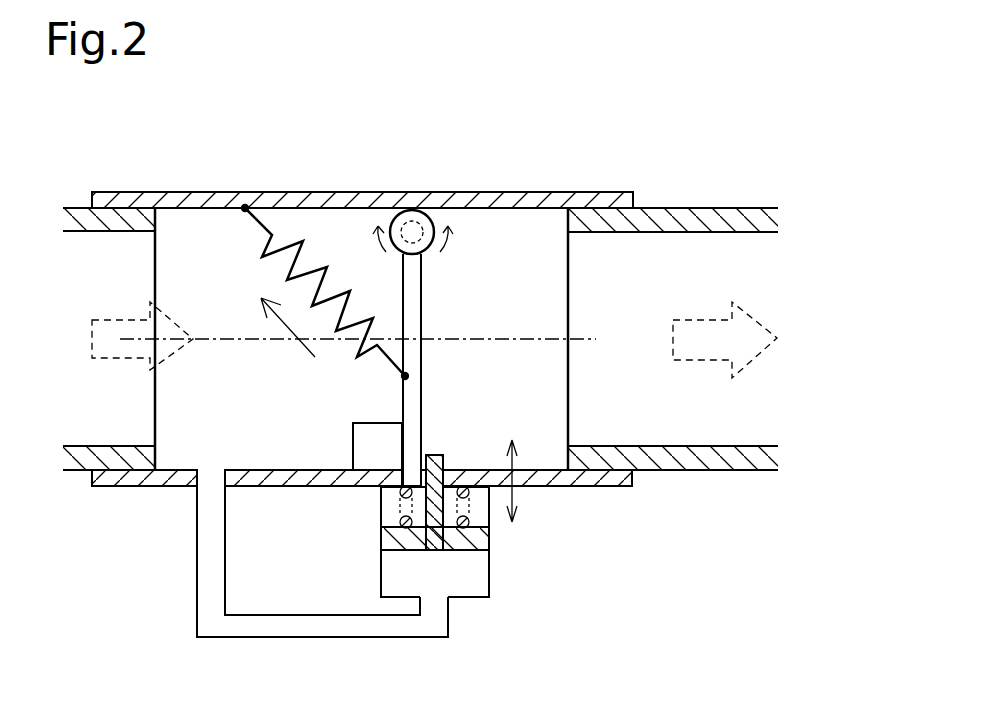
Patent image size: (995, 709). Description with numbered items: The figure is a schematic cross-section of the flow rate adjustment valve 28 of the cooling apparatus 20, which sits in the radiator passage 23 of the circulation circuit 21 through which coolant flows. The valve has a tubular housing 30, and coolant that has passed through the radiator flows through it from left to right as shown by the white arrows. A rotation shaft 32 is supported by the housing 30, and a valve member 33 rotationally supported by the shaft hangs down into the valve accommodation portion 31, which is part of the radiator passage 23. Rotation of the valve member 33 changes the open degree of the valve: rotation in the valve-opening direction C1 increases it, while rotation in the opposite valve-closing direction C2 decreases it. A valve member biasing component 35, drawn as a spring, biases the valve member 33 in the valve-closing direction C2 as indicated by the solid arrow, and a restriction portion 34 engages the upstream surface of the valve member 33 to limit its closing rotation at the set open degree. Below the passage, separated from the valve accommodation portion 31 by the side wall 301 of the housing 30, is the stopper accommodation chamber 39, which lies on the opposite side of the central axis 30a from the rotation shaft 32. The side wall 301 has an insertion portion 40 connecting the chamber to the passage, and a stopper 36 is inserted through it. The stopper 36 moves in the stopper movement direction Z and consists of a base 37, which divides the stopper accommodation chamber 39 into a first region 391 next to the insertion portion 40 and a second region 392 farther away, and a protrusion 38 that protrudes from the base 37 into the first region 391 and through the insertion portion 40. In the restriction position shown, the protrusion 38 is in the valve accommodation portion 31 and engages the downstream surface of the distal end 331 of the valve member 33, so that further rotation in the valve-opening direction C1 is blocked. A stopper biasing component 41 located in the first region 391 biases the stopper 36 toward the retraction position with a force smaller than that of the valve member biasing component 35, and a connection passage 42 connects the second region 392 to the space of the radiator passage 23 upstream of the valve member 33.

The cooling apparatus 20 is at (121, 161).
The circulation circuit 21 is at (109, 339).
The radiator passage 23 is at (688, 257).
The flow rate adjustment valve 28 is at (582, 177).
The housing 30 is at (477, 201).
The side wall 301 is at (248, 474).
The central axis 30a is at (570, 331).
The valve accommodation portion 31 is at (168, 255).
The rotation shaft 32 is at (405, 222).
The valve member 33 is at (425, 314).
The distal end 331 is at (418, 452).
The restriction portion 34 is at (353, 433).
The valve member biasing component 35 is at (265, 242).
The stopper 36 is at (502, 542).
The base 37 is at (452, 547).
The protrusion 38 is at (466, 506).
The stopper accommodation chamber 39 is at (372, 542).
The first region 391 is at (390, 506).
The second region 392 is at (391, 565).
The insertion portion 40 is at (443, 462).
The stopper biasing component 41 is at (397, 494).
The connection passage 42 is at (197, 550).
The stopper movement direction Z is at (520, 497).
The valve-opening direction C1 is at (455, 236).
The valve-closing direction C2 is at (374, 236).